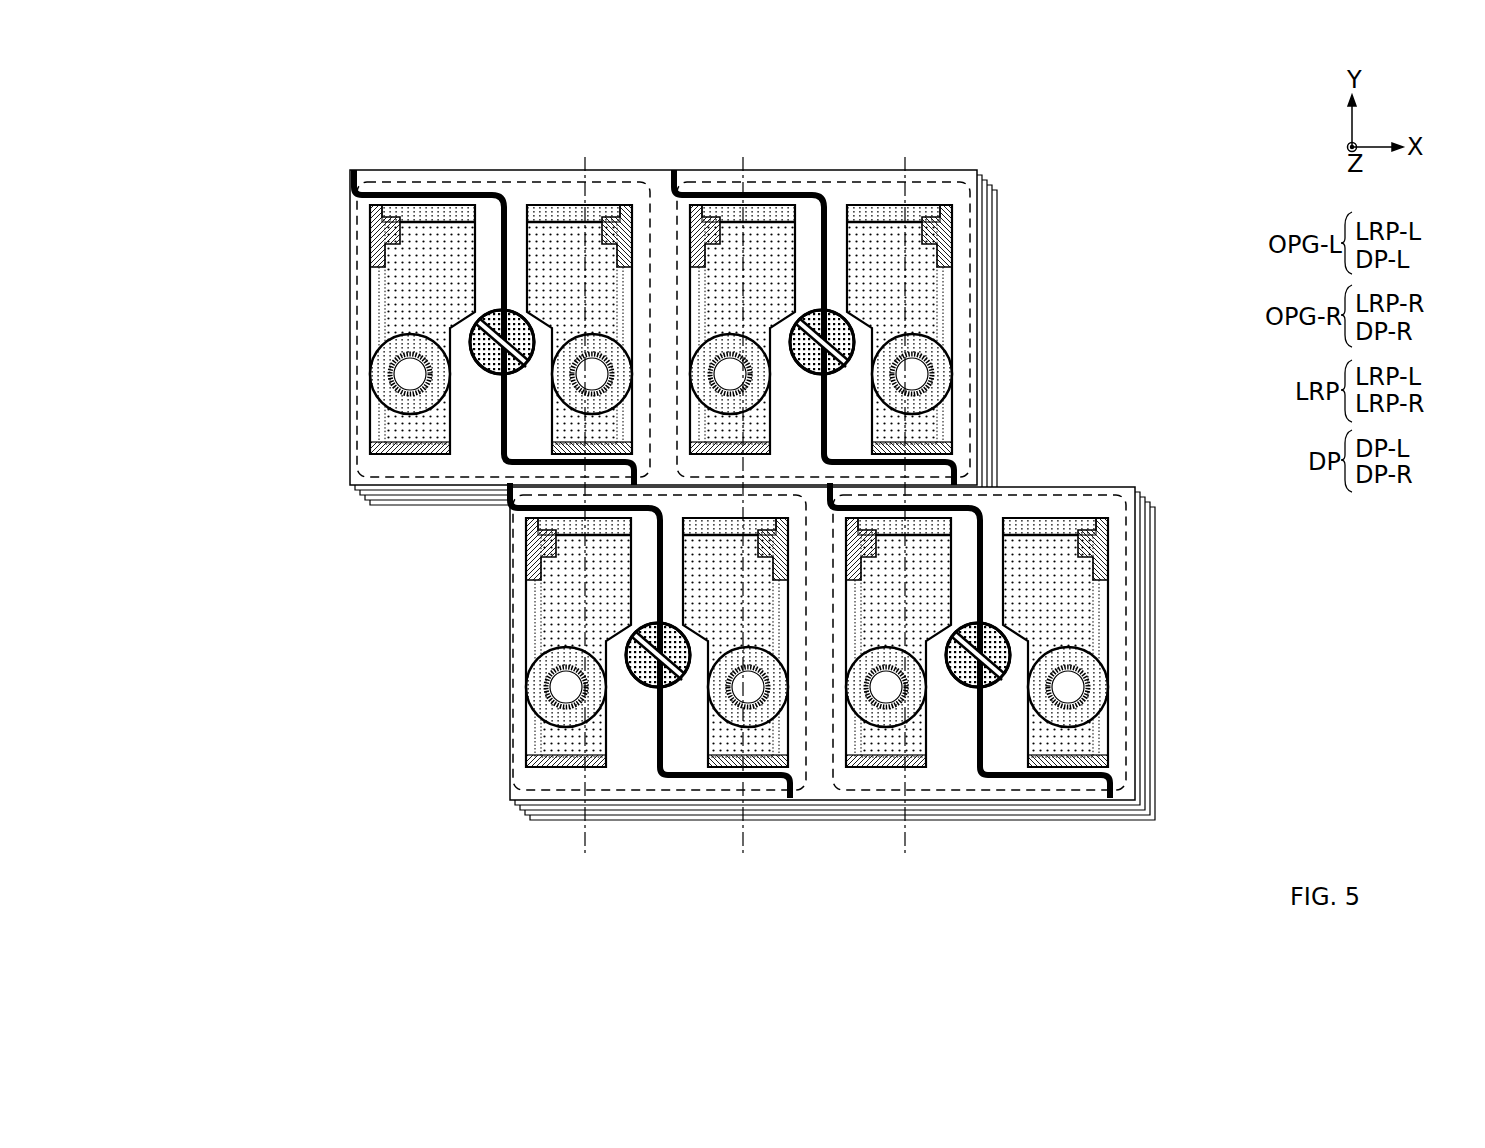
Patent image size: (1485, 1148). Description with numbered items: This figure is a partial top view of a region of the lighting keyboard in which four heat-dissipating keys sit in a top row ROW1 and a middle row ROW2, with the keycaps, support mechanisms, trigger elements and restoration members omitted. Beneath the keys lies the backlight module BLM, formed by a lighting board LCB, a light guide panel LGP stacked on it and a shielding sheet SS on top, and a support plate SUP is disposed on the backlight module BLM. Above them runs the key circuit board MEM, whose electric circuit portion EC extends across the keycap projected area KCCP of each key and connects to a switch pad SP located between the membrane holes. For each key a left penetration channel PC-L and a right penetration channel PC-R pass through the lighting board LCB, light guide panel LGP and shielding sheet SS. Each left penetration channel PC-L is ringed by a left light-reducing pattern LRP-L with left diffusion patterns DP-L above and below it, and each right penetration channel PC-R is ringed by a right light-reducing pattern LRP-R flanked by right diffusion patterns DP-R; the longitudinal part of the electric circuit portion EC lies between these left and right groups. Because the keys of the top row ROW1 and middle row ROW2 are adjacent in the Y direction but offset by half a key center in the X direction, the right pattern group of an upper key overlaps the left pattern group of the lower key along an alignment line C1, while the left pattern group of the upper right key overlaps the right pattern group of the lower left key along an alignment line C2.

The key circuit board MEM is at (376, 170).
The electric circuit portion EC is at (398, 195).
The keycap projected area KCCP is at (482, 185).
The right light-reducing pattern LRP-R is at (570, 365).
The left light-reducing pattern LRP-L is at (550, 725).
The right diffusion pattern DP-R is at (570, 207).
The left diffusion pattern DP-L is at (693, 267).
The right penetration channel PC-R is at (598, 365).
The left penetration channel PC-L is at (408, 365).
The switch pad SP is at (487, 365).
The support plate SUP is at (978, 196).
The shielding sheet SS is at (985, 218).
The light guide panel LGP is at (990, 250).
The lighting board LCB is at (995, 282).
The backlight module BLM is at (1080, 203).
The top row ROW1 is at (270, 345).
The middle row ROW2 is at (272, 648).
The alignment line C1 is at (748, 522).
The alignment line C2 is at (743, 522).